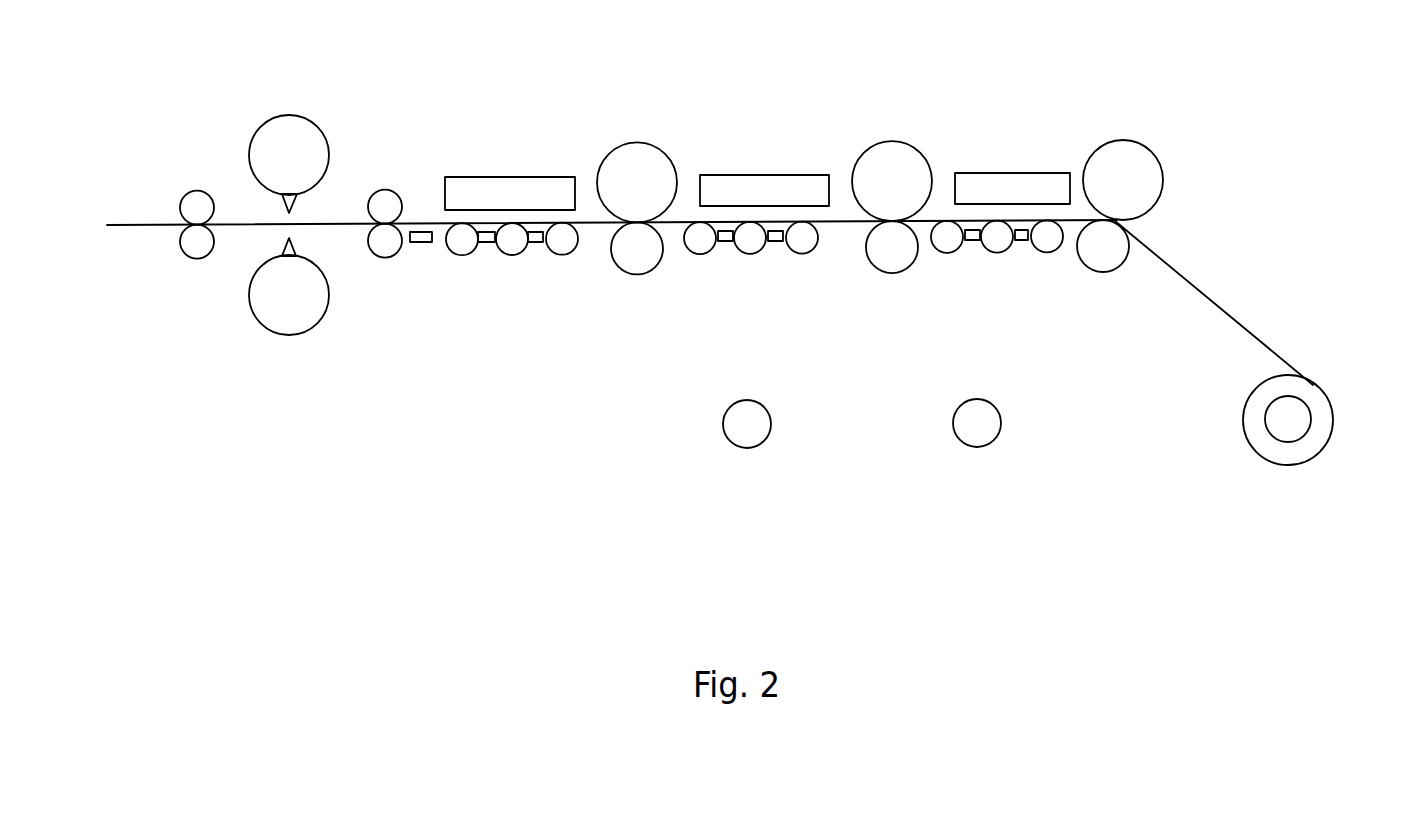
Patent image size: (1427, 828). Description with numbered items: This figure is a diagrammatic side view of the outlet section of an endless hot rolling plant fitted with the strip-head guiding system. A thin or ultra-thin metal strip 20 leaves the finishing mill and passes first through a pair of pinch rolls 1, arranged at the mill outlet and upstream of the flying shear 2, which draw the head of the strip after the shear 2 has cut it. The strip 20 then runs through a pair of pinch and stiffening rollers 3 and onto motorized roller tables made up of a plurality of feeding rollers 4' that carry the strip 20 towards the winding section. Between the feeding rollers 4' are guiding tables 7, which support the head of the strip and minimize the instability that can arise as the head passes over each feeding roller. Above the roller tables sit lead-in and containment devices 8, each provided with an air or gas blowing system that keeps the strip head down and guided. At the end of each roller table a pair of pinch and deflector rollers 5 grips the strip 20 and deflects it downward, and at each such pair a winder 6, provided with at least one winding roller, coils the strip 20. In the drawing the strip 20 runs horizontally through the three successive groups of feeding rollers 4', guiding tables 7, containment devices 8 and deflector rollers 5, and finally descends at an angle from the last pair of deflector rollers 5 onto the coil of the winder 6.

The metal strip 20 is at (150, 225).
The pair of pinch rolls 1 is at (192, 250).
The flying shear 2 is at (280, 315).
The pair of pinch and stiffening rollers 3 is at (383, 250).
The feeding rollers 4' is at (755, 287).
The pair of pinch and deflector rollers 5 is at (648, 173).
The winder 6 is at (742, 435).
The guiding tables 7 is at (535, 243).
The lead-in and containment device 8 is at (515, 177).